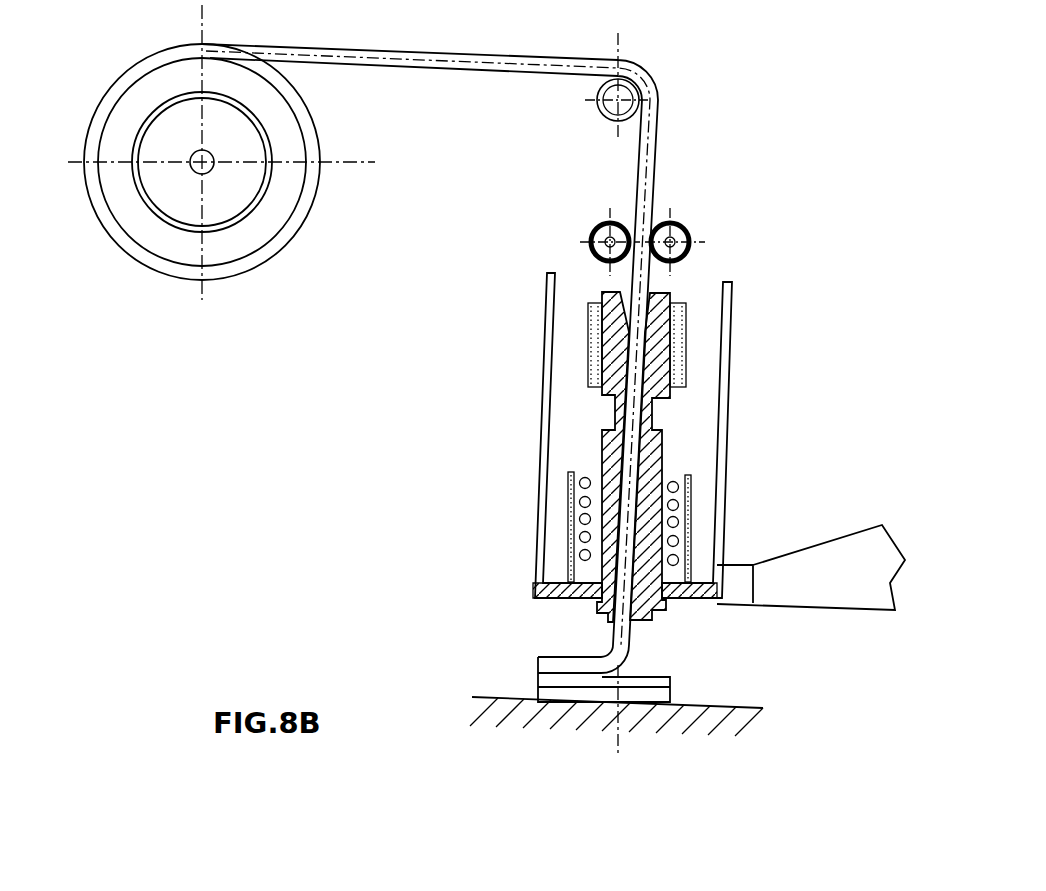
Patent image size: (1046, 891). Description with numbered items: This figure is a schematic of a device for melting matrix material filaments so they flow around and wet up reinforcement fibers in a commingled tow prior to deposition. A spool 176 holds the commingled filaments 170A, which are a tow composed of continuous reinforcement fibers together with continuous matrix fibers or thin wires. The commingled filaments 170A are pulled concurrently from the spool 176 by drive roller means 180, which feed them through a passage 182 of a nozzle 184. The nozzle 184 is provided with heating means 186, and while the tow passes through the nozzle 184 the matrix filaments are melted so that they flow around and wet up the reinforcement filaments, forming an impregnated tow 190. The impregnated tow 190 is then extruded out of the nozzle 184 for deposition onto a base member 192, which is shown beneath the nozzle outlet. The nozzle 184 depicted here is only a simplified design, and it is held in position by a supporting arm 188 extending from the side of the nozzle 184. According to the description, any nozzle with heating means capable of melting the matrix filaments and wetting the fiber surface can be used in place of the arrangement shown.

The commingled filaments 170A is at (353, 58).
The spool 176 is at (222, 200).
The drive roller means 180 is at (676, 226).
The passage 182 is at (664, 298).
The nozzle 184 is at (511, 403).
The heating means 186 is at (558, 527).
The supporting arm 188 is at (773, 587).
The impregnated tow 190 is at (608, 648).
The base member 192 is at (520, 713).